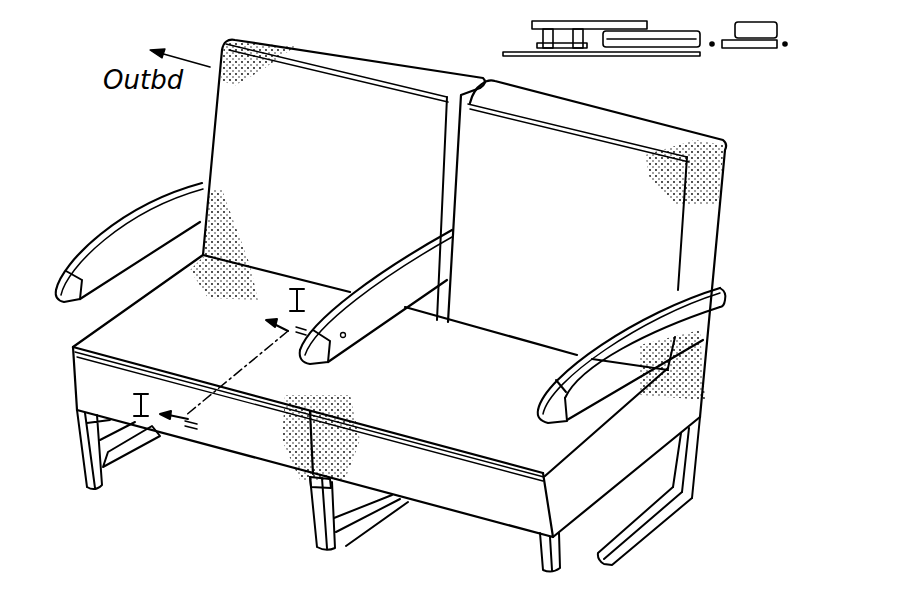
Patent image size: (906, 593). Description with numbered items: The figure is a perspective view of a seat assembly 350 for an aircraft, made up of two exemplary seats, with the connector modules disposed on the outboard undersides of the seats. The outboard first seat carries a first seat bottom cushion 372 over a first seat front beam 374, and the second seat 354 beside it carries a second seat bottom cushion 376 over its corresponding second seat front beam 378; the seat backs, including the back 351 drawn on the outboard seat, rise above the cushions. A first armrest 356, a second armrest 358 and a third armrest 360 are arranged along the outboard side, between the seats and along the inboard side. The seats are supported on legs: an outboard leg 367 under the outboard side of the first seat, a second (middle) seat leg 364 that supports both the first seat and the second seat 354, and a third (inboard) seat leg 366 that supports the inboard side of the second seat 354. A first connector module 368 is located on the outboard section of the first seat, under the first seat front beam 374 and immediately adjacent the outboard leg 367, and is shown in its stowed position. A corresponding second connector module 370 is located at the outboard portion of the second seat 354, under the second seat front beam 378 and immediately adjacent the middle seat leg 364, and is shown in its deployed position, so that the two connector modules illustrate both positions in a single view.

The seat assembly 350 is at (147, 155).
The outboard seat back 351 is at (393, 64).
The second seat 354 is at (648, 126).
The first armrest 356 is at (136, 221).
The second armrest 358 is at (399, 257).
The third armrest 360 is at (620, 332).
The second (middle) seat leg 364 is at (338, 533).
The third (inboard) seat leg 366 is at (558, 553).
The outboard leg 367 is at (110, 470).
The first connector module 368 is at (103, 428).
The second connector module 370 is at (327, 504).
The first seat bottom cushion 372 is at (103, 338).
The first seat front beam 374 is at (80, 377).
The second seat bottom cushion 376 is at (520, 441).
The second seat front beam 378 is at (473, 498).